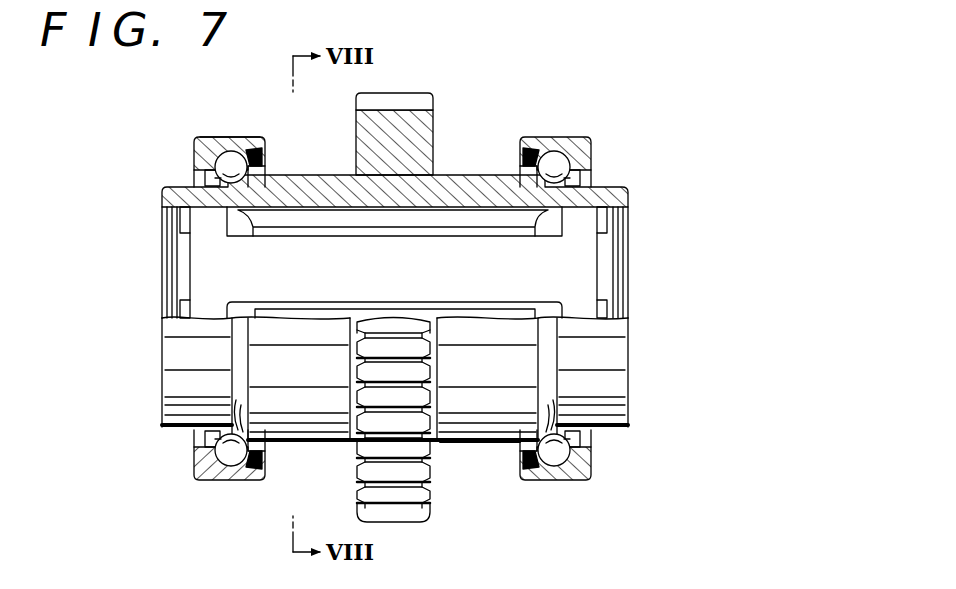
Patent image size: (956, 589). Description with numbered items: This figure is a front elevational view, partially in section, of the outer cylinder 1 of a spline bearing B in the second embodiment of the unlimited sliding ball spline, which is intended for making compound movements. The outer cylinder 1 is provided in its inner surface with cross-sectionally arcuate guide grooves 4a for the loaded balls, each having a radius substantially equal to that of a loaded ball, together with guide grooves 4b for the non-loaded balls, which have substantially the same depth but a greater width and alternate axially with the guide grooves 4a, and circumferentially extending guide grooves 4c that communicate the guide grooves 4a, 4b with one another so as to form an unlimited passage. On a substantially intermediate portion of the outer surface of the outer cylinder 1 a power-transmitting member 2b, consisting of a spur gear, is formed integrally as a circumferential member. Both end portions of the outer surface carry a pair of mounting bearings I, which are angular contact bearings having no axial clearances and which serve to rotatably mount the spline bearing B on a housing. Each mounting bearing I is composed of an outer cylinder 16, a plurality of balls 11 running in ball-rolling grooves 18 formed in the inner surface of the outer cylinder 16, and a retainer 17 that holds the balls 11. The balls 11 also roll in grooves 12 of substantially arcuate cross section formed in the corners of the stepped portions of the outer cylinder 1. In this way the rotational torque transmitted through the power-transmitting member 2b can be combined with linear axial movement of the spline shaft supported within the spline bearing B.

The outer cylinder 1 is at (298, 177).
The power-transmitting member 2b is at (436, 144).
The guide grooves for loaded balls 4a is at (470, 218).
The guide grooves for non-loaded balls 4b is at (210, 268).
The circumferential guide grooves 4c is at (203, 220).
The balls of the mounting bearing 11 is at (428, 302).
The grooves 12 is at (562, 210).
The outer cylinder of the mounting bearing 16 is at (592, 142).
The retainer 17 is at (522, 163).
The ball-rolling grooves 18 is at (562, 155).
The spline bearing B is at (490, 447).
The mounting bearings I is at (218, 135).